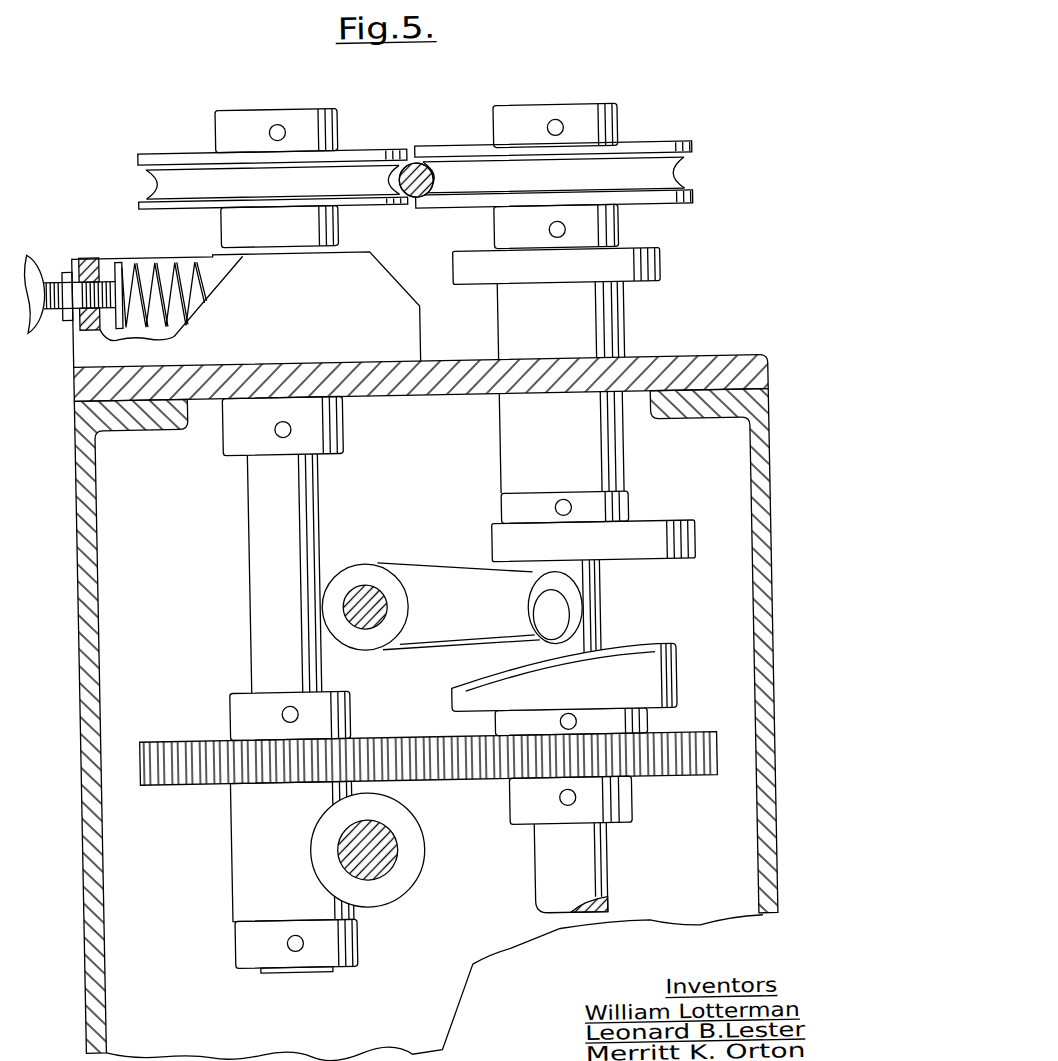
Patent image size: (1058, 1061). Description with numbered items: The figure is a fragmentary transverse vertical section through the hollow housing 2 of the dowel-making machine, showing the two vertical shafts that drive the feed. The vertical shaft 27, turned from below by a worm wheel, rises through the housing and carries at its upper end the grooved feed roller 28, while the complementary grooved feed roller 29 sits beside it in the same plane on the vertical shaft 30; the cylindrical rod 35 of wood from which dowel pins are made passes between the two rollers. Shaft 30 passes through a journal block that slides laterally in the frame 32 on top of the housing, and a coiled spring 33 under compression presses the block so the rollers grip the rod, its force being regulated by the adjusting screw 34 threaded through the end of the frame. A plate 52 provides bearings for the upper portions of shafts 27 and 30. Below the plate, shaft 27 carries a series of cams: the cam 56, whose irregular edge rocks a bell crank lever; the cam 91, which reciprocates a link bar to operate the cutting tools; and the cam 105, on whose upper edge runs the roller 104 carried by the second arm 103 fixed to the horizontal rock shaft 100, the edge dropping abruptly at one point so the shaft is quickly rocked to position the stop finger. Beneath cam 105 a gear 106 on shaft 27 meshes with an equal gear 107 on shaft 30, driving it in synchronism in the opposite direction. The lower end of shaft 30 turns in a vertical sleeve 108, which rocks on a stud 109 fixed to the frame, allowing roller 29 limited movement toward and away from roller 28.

The hollow housing 2 is at (754, 451).
The vertical shaft 27 is at (541, 855).
The grooved feed roller 28 is at (676, 178).
The complementary grooved feed roller 29 is at (167, 170).
The vertical shaft 30 is at (254, 535).
The frame 32 is at (132, 260).
The coiled spring 33 is at (155, 258).
The adjusting screw 34 is at (54, 301).
The cylindrical rod 35 is at (418, 194).
The plate 52 is at (425, 387).
The cam 56 is at (647, 269).
The cam 91 is at (637, 537).
The horizontal rock shaft 100 is at (359, 589).
The second arm 103 is at (436, 583).
The roller 104 is at (526, 607).
The cam 105 is at (655, 679).
The gear 106 is at (656, 766).
The gear 107 is at (198, 766).
The vertical sleeve 108 is at (237, 829).
The stud 109 is at (374, 868).